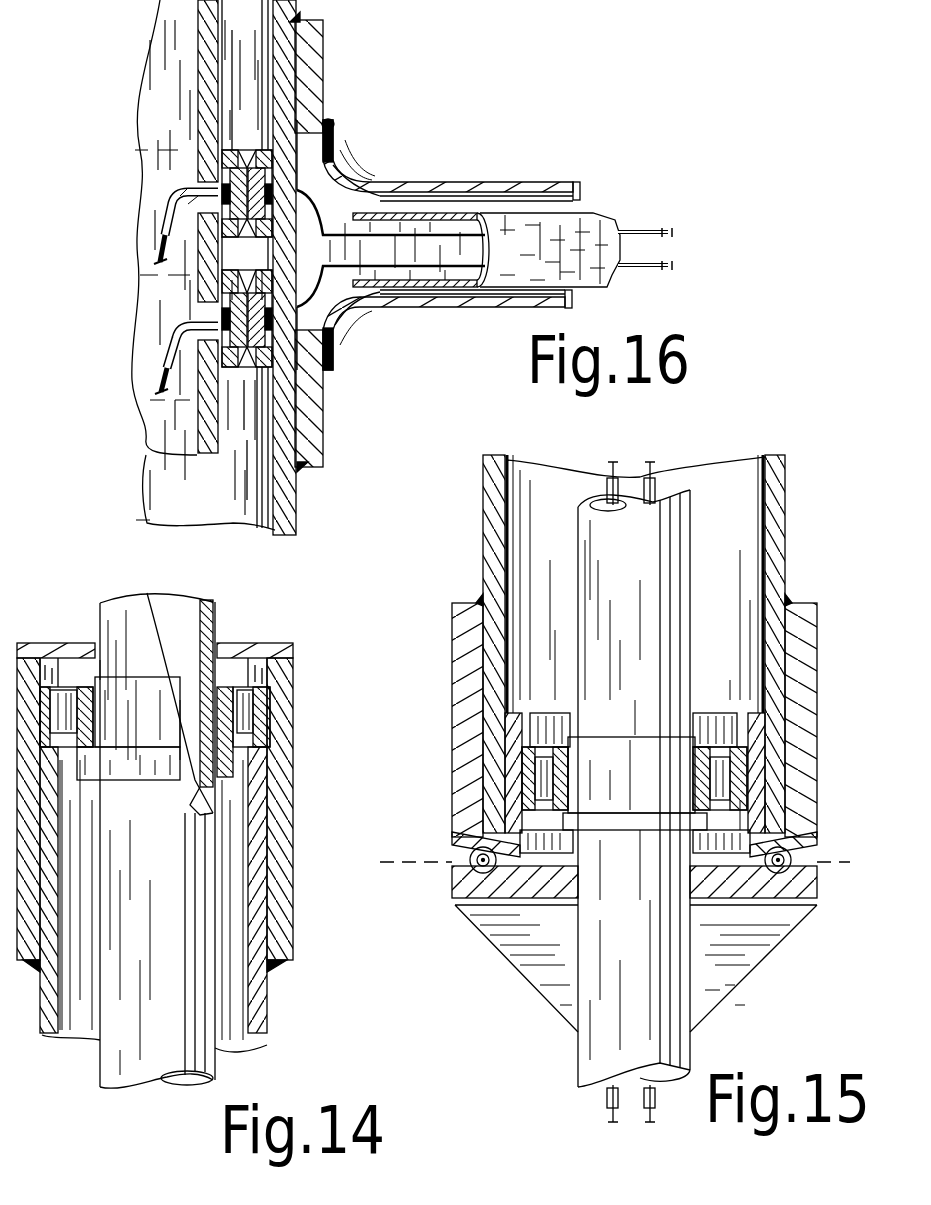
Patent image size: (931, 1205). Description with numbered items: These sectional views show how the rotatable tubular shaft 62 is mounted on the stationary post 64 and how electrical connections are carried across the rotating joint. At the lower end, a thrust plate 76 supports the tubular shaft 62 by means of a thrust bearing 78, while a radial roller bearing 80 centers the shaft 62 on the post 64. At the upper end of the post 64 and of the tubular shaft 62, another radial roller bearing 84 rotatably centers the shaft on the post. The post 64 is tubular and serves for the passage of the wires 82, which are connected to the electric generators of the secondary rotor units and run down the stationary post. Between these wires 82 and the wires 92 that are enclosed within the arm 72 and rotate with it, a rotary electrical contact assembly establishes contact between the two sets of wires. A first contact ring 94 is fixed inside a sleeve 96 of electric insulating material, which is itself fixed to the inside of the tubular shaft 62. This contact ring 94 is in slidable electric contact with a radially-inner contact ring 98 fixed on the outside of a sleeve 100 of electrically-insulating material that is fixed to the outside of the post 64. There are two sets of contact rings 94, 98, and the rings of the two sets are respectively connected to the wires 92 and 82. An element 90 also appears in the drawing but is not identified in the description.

In FIG. 16, the tubular shaft 62 is at (292, 483).
In FIG. 14, the tubular shaft 62 is at (257, 828).
In FIG. 15, the tubular shaft 62 is at (773, 500).
In FIG. 16, the post 64 is at (220, 400).
In FIG. 14, the post 64 is at (193, 833).
In FIG. 15, the post 64 is at (663, 997).
In FIG. 16, the arm 72 is at (483, 187).
In FIG. 15, the thrust plate 76 is at (748, 888).
In FIG. 15, the thrust bearing 78 is at (790, 843).
In FIG. 15, the radial roller bearing 80 is at (763, 748).
In FIG. 16, the wires 82 is at (173, 228).
In FIG. 15, the wires 82 is at (655, 472).
In FIG. 14, the radial roller bearing 84 is at (283, 725).
In FIG. 16, the inner cylinder 90 is at (547, 233).
In FIG. 16, the wires 92 is at (633, 265).
In FIG. 16, the first contact ring 94 is at (262, 182).
In FIG. 16, the sleeve 96 is at (240, 176).
In FIG. 16, the radially-inner contact ring 98 is at (207, 171).
In FIG. 16, the sleeve 100 is at (228, 160).